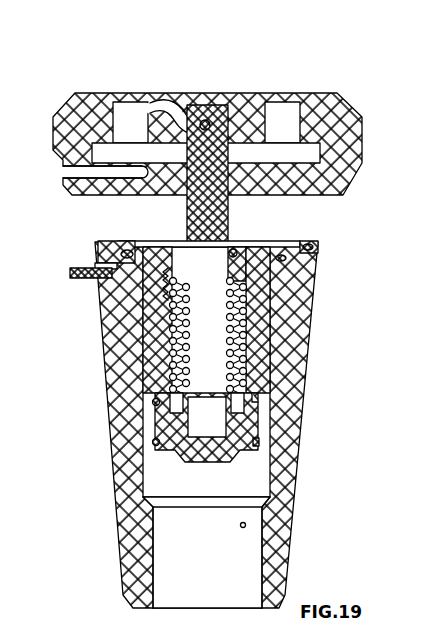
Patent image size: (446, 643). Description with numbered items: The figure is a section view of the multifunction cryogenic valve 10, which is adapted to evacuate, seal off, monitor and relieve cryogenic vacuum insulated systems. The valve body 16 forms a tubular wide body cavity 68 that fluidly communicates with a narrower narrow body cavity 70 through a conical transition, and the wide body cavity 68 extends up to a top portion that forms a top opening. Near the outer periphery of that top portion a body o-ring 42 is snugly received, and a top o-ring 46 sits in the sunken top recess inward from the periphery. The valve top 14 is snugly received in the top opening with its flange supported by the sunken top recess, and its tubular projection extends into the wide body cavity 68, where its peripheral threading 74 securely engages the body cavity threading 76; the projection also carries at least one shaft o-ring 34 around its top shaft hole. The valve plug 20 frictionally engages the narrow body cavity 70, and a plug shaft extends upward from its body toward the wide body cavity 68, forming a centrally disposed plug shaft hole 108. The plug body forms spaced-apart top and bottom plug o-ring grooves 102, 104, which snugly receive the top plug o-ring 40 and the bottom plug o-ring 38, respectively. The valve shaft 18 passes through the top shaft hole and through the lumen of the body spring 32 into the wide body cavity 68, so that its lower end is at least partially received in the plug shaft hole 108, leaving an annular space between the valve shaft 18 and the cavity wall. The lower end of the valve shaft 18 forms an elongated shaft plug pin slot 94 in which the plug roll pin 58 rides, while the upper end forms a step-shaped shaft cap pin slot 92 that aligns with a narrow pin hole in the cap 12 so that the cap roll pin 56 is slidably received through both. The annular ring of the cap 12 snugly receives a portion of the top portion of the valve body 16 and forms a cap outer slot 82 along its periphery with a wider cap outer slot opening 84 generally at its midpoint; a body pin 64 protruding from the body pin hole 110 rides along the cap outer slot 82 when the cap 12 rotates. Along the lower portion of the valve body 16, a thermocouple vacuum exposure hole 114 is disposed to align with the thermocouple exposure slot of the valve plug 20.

The multifunction cryogenic valve 10 is at (292, 62).
The cap 12 is at (346, 108).
The valve top 14 is at (277, 248).
The valve body 16 is at (288, 503).
The valve shaft 18 is at (195, 228).
The valve plug 20 is at (140, 460).
The body spring 32 is at (178, 345).
The shaft o-ring 34 is at (246, 257).
The bottom plug o-ring 38 is at (262, 450).
The top plug o-ring 40 is at (258, 441).
The body o-ring 42 is at (112, 250).
The top o-ring 46 is at (138, 247).
The cap roll pin 56 is at (208, 120).
The plug roll pin 58 is at (254, 401).
The body pin 64 is at (70, 273).
The wide body cavity 68 is at (152, 368).
The narrow body cavity 70 is at (150, 573).
The peripheral threading 74 is at (162, 288).
The body cavity threading 76 is at (270, 288).
The cap outer slot 82 is at (76, 162).
The cap outer slot opening 84 is at (80, 186).
The shaft cap pin slot 92 is at (163, 108).
The shaft plug pin slot 94 is at (214, 348).
The top plug o-ring groove 102 is at (153, 403).
The bottom plug o-ring groove 104 is at (153, 443).
The plug shaft hole 108 is at (204, 430).
The body pin hole 110 is at (97, 258).
The thermocouple vacuum exposure hole 114 is at (243, 526).